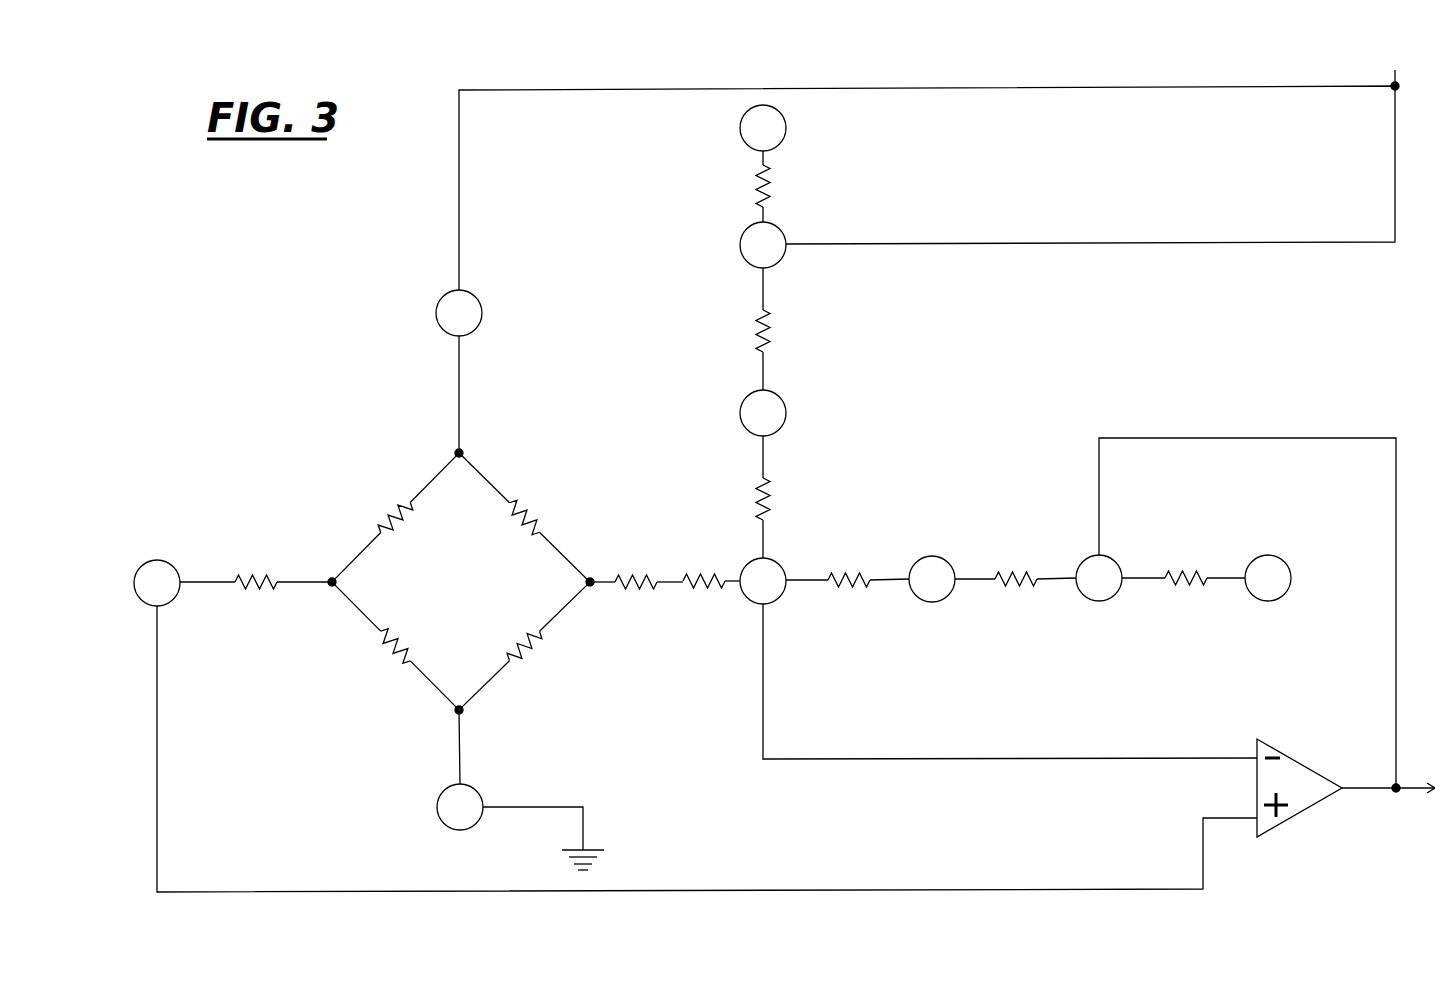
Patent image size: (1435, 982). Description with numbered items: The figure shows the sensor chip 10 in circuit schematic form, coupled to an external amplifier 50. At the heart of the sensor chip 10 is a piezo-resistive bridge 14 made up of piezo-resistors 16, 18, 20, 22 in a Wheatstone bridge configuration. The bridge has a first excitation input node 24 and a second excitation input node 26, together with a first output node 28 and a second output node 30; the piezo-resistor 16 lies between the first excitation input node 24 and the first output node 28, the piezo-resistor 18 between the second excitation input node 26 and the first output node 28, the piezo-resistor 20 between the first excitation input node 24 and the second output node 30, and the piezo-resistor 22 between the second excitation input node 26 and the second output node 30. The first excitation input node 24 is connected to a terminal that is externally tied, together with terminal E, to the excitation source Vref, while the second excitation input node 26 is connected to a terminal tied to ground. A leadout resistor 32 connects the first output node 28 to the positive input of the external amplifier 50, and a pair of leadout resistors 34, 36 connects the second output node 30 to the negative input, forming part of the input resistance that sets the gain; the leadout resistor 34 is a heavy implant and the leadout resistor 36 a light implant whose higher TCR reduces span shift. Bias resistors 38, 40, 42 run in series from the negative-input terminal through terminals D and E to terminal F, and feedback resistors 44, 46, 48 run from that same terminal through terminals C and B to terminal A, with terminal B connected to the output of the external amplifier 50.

The sensor chip 10 is at (1087, 355).
The piezo-resistive bridge 14 is at (602, 397).
The piezo-resistor 16 is at (387, 519).
The piezo-resistor 18 is at (392, 650).
The piezo-resistor 20 is at (528, 516).
The piezo-resistor 22 is at (523, 653).
The first excitation input node 24 is at (459, 453).
The second excitation input node 26 is at (459, 710).
The first output node 28 is at (331, 584).
The second output node 30 is at (590, 582).
The leadout resistor 32 is at (245, 580).
The leadout resistor 34 is at (628, 584).
The leadout resistor 36 is at (713, 584).
The resistor 38 is at (768, 498).
The resistor 40 is at (768, 329).
The resistor 42 is at (768, 190).
The resistor 44 is at (847, 583).
The resistor 46 is at (1010, 582).
The resistor 48 is at (1175, 582).
The external amplifier 50 is at (1308, 769).